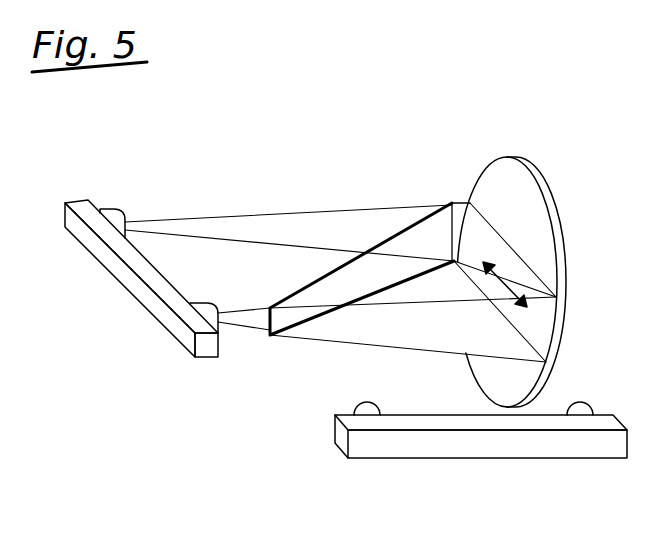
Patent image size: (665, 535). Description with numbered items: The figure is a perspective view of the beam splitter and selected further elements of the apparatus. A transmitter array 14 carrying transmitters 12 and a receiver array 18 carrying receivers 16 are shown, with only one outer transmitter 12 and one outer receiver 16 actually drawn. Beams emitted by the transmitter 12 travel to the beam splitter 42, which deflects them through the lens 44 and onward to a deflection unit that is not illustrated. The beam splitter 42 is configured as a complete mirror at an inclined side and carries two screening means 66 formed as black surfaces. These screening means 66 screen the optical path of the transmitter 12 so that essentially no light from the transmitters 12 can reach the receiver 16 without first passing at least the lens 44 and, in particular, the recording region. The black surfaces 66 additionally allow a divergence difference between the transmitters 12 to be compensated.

The transmitter 12 is at (362, 408).
The transmitter array 14 is at (400, 445).
The receiver 16 is at (110, 212).
The receiver array 18 is at (97, 257).
The beam splitter 42 is at (413, 235).
The lens 44 is at (542, 180).
The screening means 66 is at (458, 302).